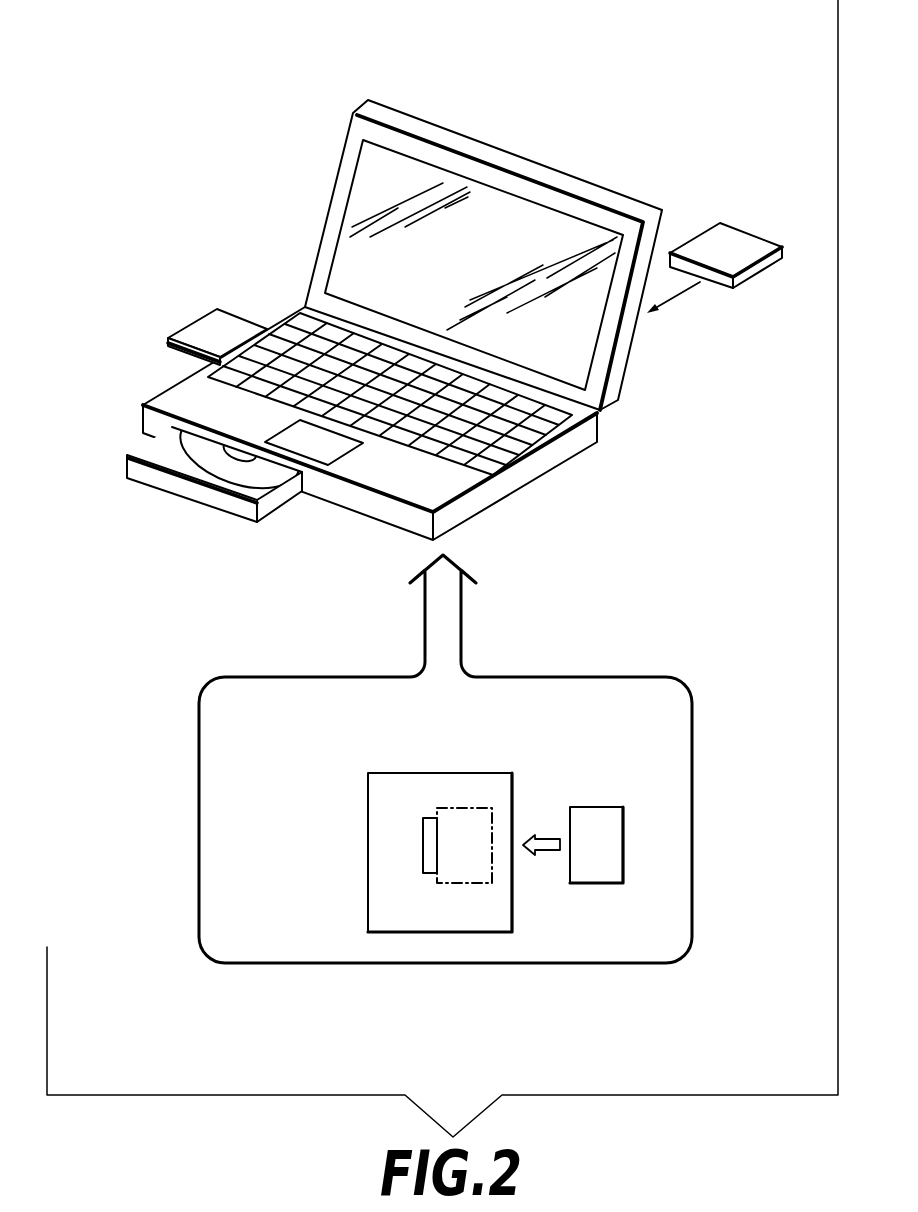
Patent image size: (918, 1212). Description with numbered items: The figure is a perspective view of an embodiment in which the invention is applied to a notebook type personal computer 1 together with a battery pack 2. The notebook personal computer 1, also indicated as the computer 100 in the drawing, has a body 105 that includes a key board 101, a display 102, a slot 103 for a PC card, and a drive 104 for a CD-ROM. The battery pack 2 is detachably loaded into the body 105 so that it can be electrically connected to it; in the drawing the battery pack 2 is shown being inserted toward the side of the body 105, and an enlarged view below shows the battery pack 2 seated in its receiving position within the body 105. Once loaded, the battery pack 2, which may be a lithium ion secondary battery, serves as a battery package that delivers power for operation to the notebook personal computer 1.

The notebook personal computer 1 is at (537, 125).
The battery pack 2 is at (740, 247).
The notebook personal computer 100 is at (615, 180).
The key board 101 is at (302, 327).
The display 102 is at (365, 192).
The slot 103 is at (202, 332).
The drive 104 is at (210, 448).
The body 105 is at (510, 482).